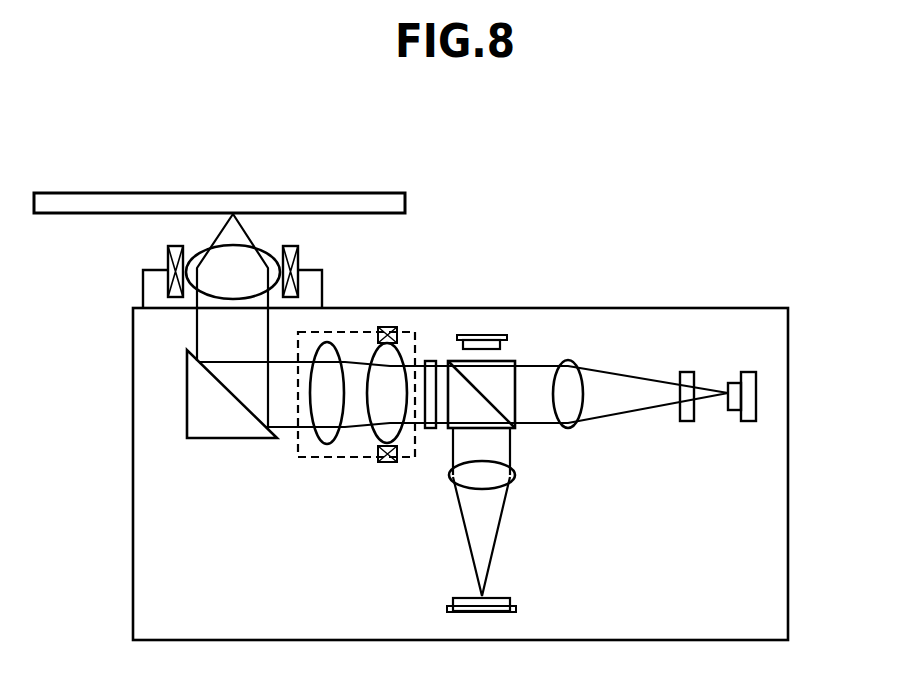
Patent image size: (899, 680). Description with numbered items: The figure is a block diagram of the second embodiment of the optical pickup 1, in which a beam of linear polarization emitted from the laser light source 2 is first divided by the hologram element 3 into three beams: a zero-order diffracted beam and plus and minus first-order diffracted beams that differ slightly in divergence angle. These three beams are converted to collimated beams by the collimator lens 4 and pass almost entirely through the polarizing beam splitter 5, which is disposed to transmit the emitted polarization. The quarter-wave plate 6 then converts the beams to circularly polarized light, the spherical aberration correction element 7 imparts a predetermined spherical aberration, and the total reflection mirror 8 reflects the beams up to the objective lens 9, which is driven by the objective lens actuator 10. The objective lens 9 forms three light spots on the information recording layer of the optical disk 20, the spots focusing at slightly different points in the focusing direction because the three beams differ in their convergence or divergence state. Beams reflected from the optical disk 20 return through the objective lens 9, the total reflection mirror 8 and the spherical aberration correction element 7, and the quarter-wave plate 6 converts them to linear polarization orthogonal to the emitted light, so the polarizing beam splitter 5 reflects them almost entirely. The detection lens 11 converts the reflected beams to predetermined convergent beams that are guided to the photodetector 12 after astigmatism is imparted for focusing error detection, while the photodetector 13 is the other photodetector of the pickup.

The optical pickup 1 is at (753, 582).
The laser light source 2 is at (757, 389).
The hologram element 3 is at (687, 382).
The collimator lens 4 is at (572, 395).
The polarizing beam splitter 5 is at (503, 398).
The quarter-wave plate 6 is at (428, 433).
The spherical aberration correction element 7 is at (390, 358).
The total reflection mirror 8 is at (204, 418).
The objective lens 9 is at (201, 262).
The objective lens actuator 10 is at (167, 262).
The detection lens 11 is at (500, 488).
The photodetector 12 is at (455, 598).
The photodetector 13 is at (487, 340).
The optical disk 20 is at (300, 200).